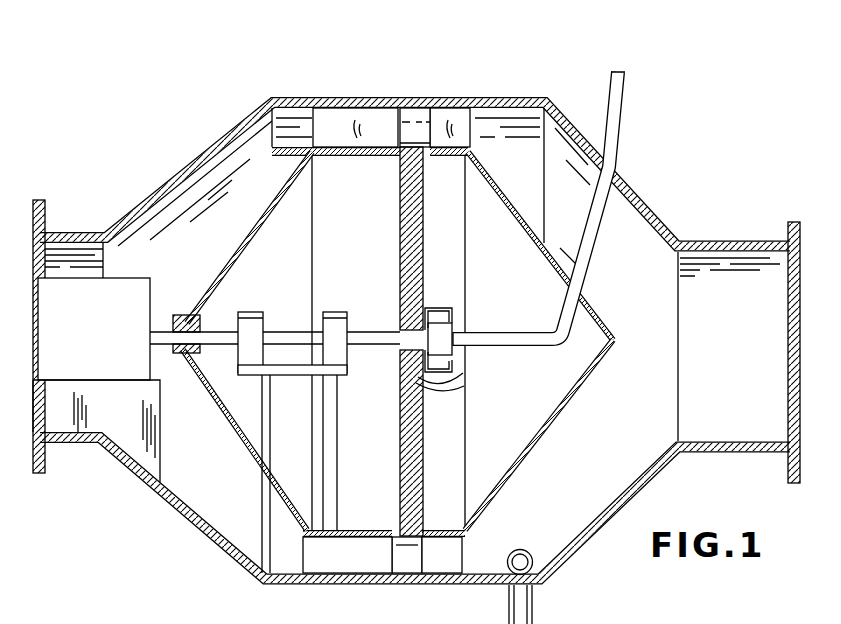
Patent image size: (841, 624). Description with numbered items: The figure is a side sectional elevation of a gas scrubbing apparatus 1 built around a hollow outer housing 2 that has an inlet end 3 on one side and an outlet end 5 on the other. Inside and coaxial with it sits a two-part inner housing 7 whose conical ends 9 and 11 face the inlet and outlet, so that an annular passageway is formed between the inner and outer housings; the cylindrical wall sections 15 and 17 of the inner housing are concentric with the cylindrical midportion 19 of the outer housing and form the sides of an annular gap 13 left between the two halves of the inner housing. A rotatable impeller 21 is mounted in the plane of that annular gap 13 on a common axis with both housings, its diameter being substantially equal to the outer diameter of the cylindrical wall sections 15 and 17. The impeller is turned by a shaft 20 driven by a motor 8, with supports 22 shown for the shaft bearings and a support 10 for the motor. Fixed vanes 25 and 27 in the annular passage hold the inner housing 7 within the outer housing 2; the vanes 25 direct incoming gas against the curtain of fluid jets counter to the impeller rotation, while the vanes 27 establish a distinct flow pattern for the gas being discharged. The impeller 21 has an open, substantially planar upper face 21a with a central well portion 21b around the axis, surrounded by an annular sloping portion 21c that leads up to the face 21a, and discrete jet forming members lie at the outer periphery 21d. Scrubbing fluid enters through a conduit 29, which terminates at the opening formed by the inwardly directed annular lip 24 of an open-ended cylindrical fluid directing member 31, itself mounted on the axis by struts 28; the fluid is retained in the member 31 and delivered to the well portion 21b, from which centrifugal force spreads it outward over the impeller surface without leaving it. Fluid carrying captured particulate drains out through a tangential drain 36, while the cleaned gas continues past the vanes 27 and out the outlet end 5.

The gas scrubbing apparatus 1 is at (531, 69).
The hollow outer housing 2 is at (651, 212).
The inlet end 3 is at (71, 230).
The outlet end 5 is at (727, 241).
The inner housing 7 is at (519, 203).
The motor 8 is at (122, 287).
The conical end 9 is at (258, 238).
The motor support 10 is at (150, 442).
The conical end 11 is at (563, 406).
The annular gap 13 is at (412, 131).
The cylindrical wall section 15 is at (322, 538).
The cylindrical wall section 17 is at (458, 546).
The cylindrical midportion 19 is at (487, 106).
The shaft 20 is at (213, 330).
The rotatable impeller 21 is at (425, 227).
The upper face 21a is at (424, 436).
The central well portion 21b is at (448, 379).
The annular sloping portion 21c is at (449, 388).
The outer periphery 21d is at (418, 523).
The supports 22 is at (327, 418).
The inwardly directed annular lip 24 is at (454, 319).
The fixed vanes 25 is at (340, 118).
The fixed vanes 27 is at (445, 125).
The struts 28 is at (416, 352).
The conduit 29 is at (626, 97).
The scrubbing fluid directing member 31 is at (437, 307).
The drain 36 is at (540, 603).